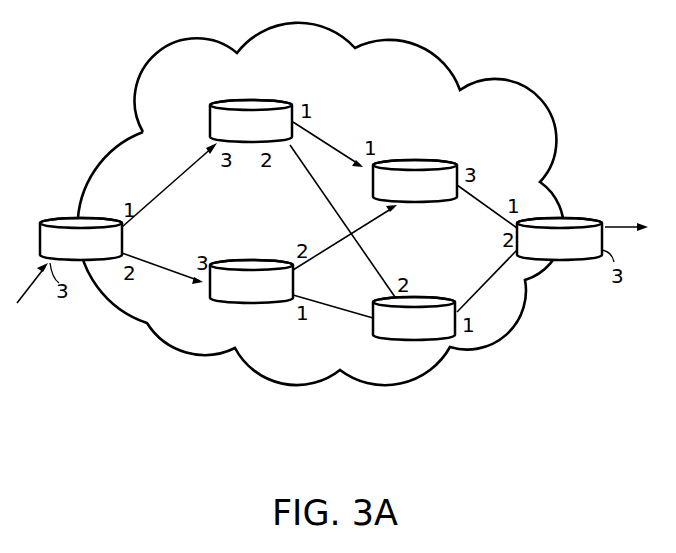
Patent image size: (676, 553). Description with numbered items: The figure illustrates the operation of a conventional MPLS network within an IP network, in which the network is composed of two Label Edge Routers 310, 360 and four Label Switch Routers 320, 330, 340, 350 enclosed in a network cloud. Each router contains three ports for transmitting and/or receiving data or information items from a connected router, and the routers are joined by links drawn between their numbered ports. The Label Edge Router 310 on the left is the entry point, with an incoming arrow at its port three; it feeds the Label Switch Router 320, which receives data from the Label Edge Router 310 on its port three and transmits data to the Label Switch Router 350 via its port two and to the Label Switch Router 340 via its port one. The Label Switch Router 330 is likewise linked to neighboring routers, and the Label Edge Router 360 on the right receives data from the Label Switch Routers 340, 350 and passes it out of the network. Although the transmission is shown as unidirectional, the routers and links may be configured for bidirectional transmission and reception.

The Label Edge Router 310 is at (60, 215).
The Label Switch Router 320 is at (263, 97).
The Label Switch Router 330 is at (250, 258).
The Label Switch Router 340 is at (418, 158).
The Label Switch Router 350 is at (445, 295).
The Label Edge Router 360 is at (592, 217).